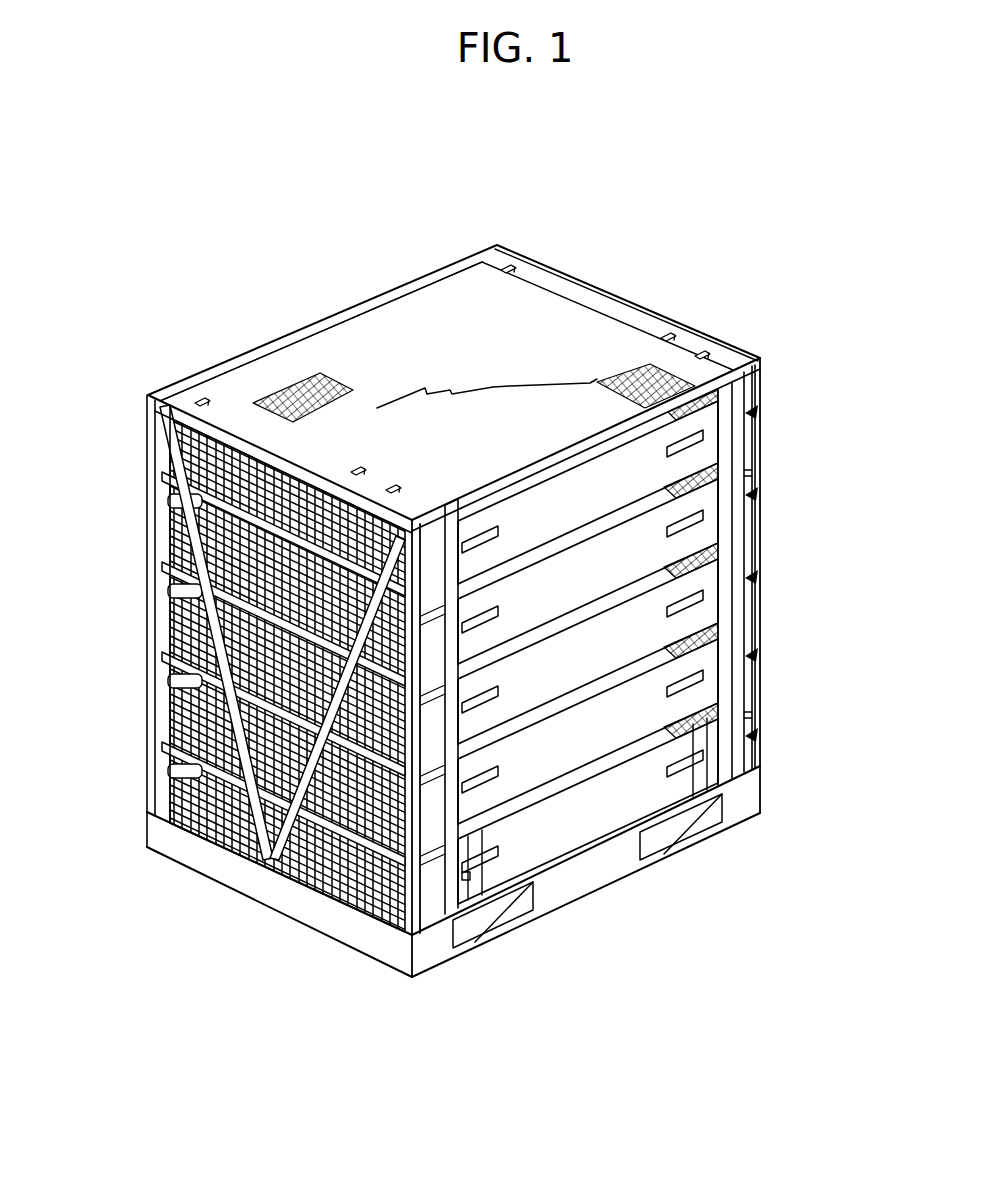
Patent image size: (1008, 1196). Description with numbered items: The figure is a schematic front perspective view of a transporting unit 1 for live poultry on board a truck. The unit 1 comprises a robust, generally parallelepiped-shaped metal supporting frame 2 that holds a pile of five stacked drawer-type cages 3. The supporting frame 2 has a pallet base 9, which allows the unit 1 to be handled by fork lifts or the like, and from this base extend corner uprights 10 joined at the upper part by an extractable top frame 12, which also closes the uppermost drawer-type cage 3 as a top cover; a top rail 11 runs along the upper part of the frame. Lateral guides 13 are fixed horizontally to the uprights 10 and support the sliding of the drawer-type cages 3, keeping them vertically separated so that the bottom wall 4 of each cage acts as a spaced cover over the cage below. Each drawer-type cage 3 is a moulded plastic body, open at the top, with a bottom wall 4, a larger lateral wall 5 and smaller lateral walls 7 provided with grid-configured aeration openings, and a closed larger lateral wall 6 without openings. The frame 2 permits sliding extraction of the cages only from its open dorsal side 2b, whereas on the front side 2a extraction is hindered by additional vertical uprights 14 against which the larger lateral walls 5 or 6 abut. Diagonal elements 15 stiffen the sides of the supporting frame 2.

The transporting unit 1 is at (240, 208).
The supporting frame 2 is at (146, 410).
The front side 2a is at (570, 447).
The dorsal side 2b is at (275, 340).
The drawer-type cage 3 is at (757, 412).
The bottom wall 4 is at (455, 440).
The larger lateral wall 5 is at (322, 398).
The larger lateral wall 6 is at (688, 458).
The smaller lateral wall 7 is at (205, 477).
The pallet base 9 is at (563, 893).
The corner upright 10 is at (150, 618).
The top rail 11 is at (615, 300).
The top frame 12 is at (465, 305).
The lateral guide 13 is at (222, 560).
The additional vertical upright 14 is at (730, 408).
The diagonal element 15 is at (300, 808).